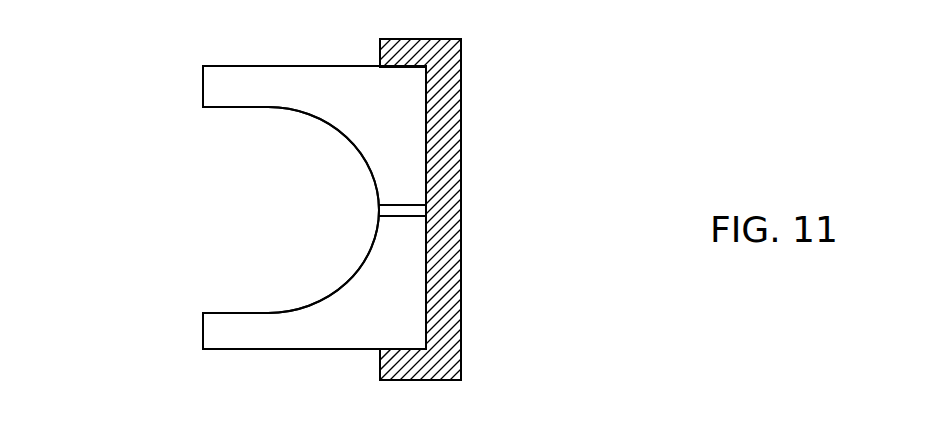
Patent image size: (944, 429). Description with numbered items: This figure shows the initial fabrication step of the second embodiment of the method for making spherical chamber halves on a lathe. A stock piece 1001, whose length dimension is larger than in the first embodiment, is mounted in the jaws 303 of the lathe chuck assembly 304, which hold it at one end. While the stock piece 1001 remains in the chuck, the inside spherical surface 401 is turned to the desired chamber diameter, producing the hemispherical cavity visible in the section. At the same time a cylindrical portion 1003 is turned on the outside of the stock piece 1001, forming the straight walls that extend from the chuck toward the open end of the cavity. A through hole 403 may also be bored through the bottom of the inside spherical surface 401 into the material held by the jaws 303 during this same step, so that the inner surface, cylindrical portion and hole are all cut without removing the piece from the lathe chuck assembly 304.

The stock piece 1001 is at (331, 85).
The cylindrical portion 1003 is at (229, 124).
The inside spherical surface 401 is at (347, 140).
The through hole 403 is at (368, 215).
The jaws 303 is at (398, 365).
The lathe chuck assembly 304 is at (461, 310).